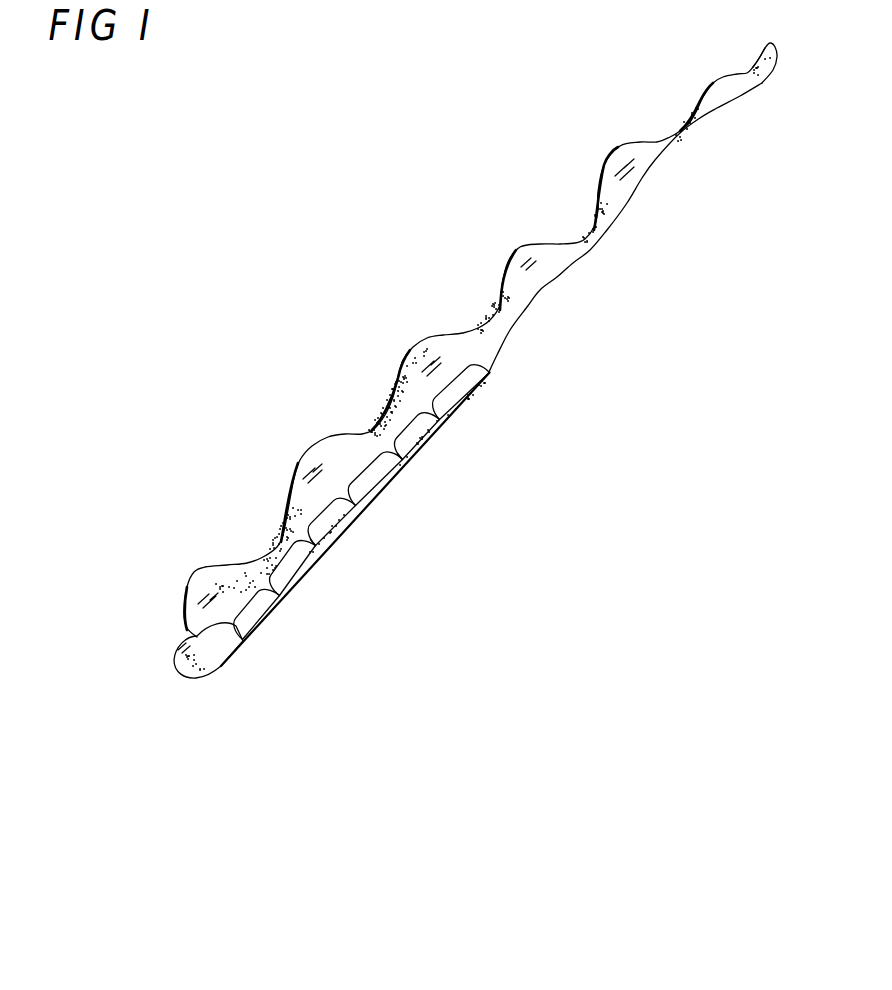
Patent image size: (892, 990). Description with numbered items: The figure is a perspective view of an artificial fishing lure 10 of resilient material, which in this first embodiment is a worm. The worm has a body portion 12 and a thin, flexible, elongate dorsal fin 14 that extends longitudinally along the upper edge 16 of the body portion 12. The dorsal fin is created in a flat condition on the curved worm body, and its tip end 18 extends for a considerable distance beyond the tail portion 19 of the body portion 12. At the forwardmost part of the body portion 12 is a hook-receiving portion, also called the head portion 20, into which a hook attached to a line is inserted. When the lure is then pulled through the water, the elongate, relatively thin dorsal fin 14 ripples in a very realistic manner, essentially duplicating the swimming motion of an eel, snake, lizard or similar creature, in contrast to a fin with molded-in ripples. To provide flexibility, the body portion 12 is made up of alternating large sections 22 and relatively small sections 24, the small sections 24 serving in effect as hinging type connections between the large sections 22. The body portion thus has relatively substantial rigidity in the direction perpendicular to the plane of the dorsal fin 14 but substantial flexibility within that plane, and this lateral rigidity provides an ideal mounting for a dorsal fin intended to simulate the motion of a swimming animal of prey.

The lure 10 is at (134, 352).
The body portion 12 is at (355, 515).
The dorsal fin 14 is at (480, 356).
The upper edge 16 is at (406, 406).
The tip end 18 is at (780, 79).
The tail portion 19 is at (625, 231).
The head portion 20 is at (226, 670).
The large sections 22 is at (445, 436).
The small sections 24 is at (387, 520).